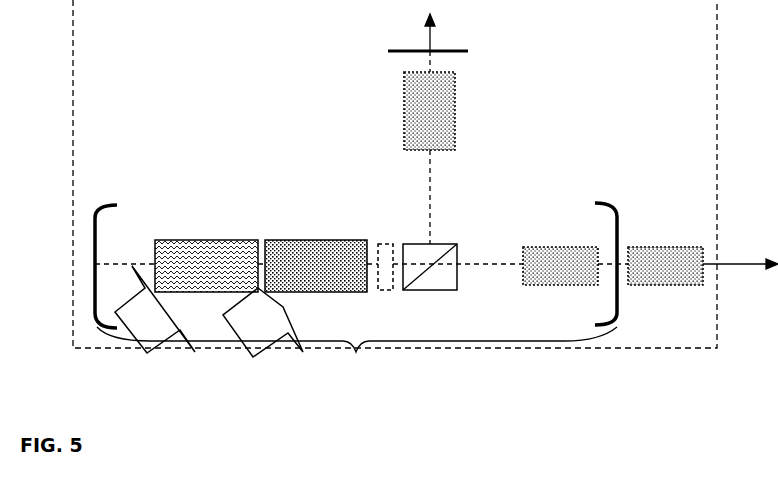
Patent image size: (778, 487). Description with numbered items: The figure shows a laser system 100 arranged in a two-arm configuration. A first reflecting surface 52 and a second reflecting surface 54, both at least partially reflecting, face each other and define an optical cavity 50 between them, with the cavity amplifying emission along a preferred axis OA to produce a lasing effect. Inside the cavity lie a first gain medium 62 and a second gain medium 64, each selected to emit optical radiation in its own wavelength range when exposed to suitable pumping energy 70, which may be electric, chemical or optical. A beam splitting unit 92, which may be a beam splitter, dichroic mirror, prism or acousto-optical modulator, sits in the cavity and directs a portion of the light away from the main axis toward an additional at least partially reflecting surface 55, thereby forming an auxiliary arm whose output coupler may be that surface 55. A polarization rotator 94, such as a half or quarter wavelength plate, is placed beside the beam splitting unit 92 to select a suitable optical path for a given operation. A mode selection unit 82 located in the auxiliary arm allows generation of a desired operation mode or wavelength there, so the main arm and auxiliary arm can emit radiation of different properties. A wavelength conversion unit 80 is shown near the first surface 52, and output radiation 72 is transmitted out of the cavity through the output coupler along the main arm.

The laser system 100 is at (590, 88).
The preferred axis OA is at (474, 262).
The additional at least partially reflecting surface 55 is at (453, 50).
The mode selection unit 82 is at (412, 100).
The second surface 54 is at (99, 212).
The first surface 52 is at (616, 216).
The second gain medium 64 is at (187, 248).
The first gain medium 62 is at (295, 246).
The pumping energy 70 is at (209, 311).
The polarization rotator 94 is at (384, 290).
The beam splitting unit 92 is at (433, 289).
The wavelength conversion unit 80 is at (630, 283).
The output radiation 72 is at (740, 279).
The optical cavity 50 is at (357, 356).